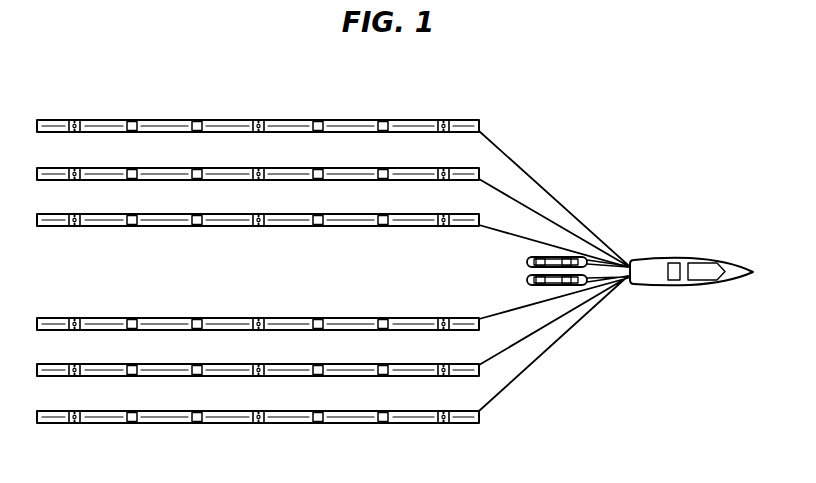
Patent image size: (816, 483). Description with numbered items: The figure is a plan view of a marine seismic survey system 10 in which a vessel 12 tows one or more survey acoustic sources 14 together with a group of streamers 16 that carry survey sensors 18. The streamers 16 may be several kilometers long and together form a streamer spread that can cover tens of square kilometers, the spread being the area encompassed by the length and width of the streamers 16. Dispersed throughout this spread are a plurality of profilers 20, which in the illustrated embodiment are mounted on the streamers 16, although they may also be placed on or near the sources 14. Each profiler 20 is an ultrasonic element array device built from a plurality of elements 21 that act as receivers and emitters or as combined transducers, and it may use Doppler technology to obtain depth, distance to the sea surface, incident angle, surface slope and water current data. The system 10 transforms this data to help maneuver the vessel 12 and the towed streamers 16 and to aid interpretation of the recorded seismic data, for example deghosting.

The marine seismic survey system 10 is at (628, 101).
The vessel 12 is at (700, 257).
The survey acoustic sources 14 is at (558, 257).
The streamers 16 is at (327, 274).
The survey sensors 18 is at (318, 120).
The profilers 20 is at (68, 126).
The elements 21 is at (258, 120).